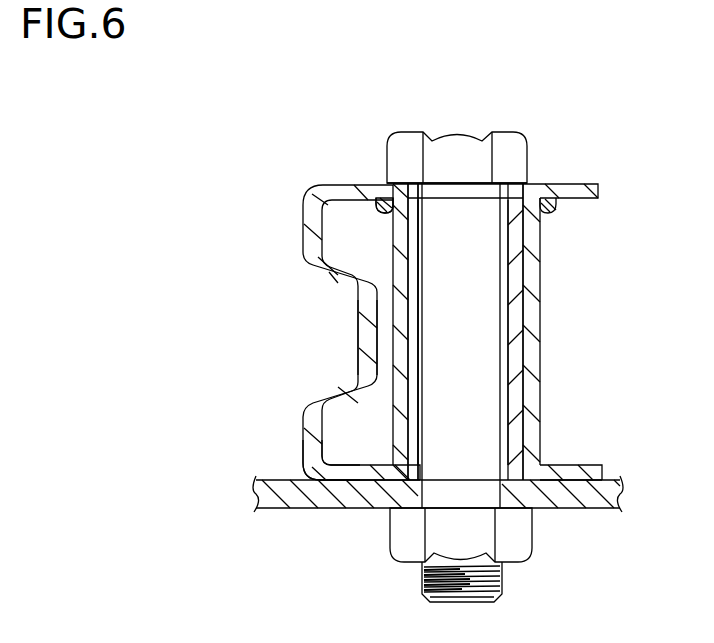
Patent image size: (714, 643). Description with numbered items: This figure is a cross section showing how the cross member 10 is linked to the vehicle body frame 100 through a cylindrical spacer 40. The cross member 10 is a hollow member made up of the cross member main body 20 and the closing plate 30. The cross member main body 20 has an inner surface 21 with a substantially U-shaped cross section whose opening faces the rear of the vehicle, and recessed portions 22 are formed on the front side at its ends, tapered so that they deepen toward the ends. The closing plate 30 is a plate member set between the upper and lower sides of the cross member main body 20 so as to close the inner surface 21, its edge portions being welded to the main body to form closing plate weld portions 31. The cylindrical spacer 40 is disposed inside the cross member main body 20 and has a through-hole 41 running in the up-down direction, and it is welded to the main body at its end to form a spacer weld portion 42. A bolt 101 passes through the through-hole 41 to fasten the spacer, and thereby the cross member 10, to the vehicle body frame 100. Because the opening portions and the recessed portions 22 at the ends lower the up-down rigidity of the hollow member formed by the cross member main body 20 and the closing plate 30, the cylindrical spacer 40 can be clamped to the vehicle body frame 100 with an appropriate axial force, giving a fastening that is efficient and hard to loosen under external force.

The cross member 10 is at (431, 298).
The cross member main body 20 is at (301, 229).
The inner surface 21 is at (314, 437).
The recessed portions 22 is at (358, 323).
The closing plate 30 is at (495, 331).
The closing plate weld portions 31 is at (556, 208).
The cylindrical spacer 40 is at (521, 373).
The through-hole 41 is at (416, 342).
The spacer weld portion 42 is at (384, 207).
The vehicle body frame 100 is at (318, 508).
The bolt 101 is at (458, 146).